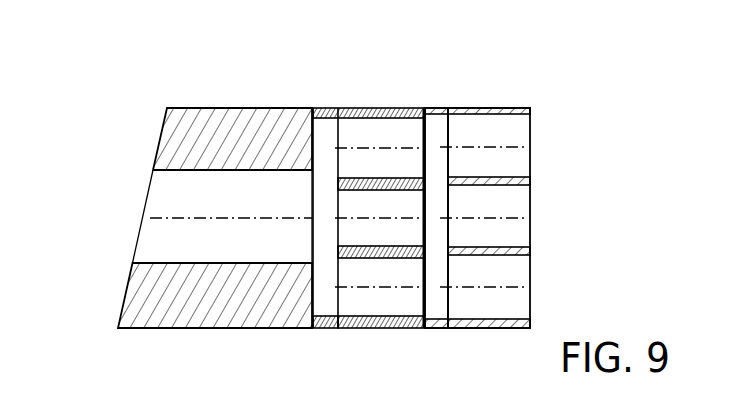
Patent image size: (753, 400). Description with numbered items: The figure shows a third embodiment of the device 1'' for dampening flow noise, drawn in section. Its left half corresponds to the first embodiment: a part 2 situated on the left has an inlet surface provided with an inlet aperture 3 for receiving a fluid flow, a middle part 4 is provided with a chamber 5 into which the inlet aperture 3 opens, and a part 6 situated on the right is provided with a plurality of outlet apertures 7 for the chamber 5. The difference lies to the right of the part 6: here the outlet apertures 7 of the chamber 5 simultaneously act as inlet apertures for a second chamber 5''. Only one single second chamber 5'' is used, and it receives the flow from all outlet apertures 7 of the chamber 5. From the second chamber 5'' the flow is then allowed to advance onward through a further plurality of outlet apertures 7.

The device 1'' is at (323, 201).
The part situated on the left 2 is at (168, 318).
The inlet aperture 3 is at (145, 236).
The middle part 4 is at (322, 326).
The chamber 5 is at (368, 78).
The second chamber 5'' is at (477, 167).
The part situated on the right 6 is at (355, 328).
The outlet aperture 7 is at (380, 121).